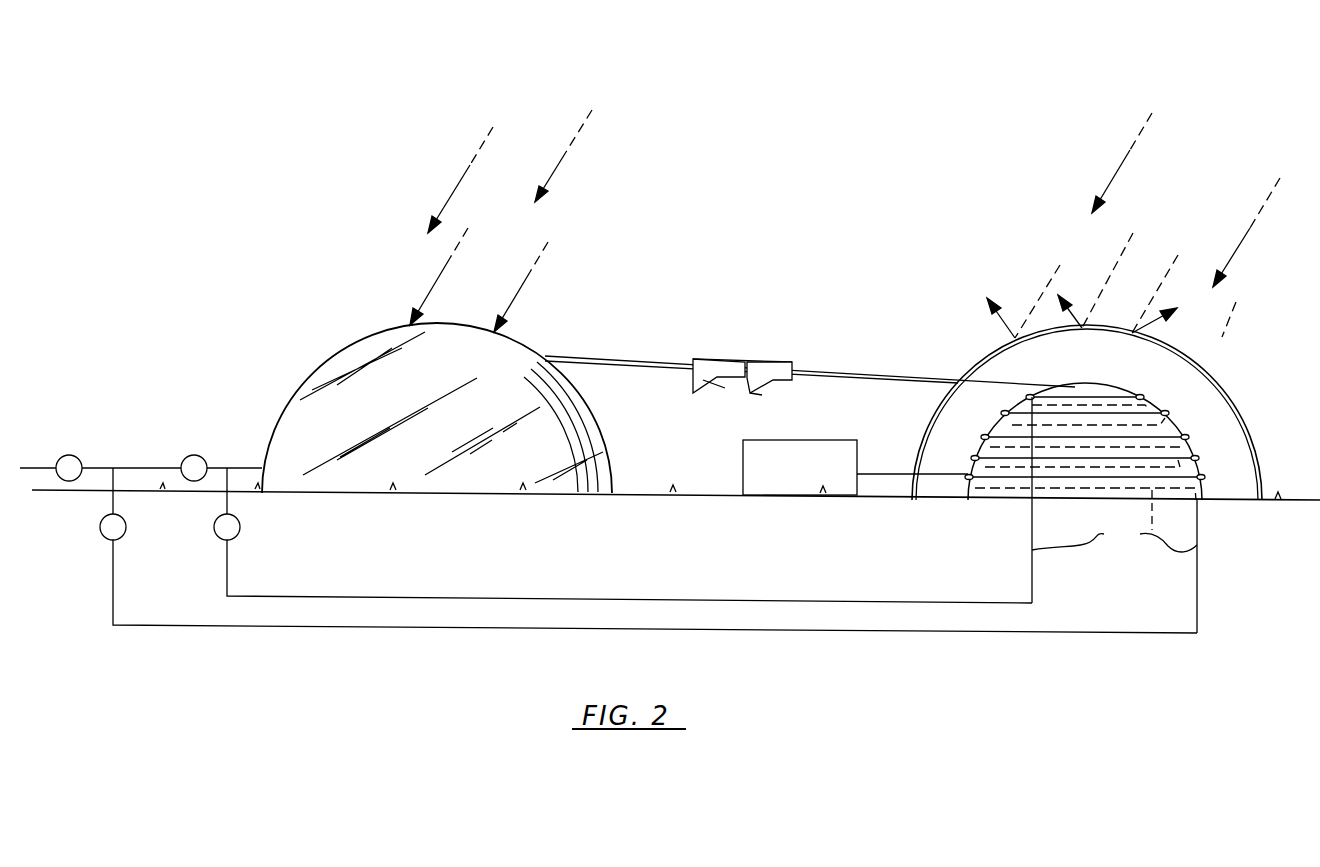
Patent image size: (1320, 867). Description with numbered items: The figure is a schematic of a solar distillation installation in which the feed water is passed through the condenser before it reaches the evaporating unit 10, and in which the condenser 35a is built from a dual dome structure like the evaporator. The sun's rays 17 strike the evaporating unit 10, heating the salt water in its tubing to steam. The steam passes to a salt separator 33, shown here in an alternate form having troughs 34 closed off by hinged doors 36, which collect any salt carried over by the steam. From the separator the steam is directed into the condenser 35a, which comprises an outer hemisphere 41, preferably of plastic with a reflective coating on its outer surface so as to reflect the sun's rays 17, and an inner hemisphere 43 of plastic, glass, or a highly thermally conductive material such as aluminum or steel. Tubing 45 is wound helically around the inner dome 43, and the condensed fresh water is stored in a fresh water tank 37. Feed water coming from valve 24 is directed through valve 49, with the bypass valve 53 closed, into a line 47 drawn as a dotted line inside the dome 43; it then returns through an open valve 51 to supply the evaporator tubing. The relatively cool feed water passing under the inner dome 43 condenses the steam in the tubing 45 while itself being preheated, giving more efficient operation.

The evaporating unit 10 is at (320, 364).
The sun's rays 17 is at (560, 164).
The valve 24 is at (72, 455).
The salt separator 33 is at (712, 358).
The troughs 34 is at (772, 382).
The hinged doors 36 is at (750, 380).
The fresh water tank 37 is at (840, 440).
The outer hemisphere 41 is at (975, 366).
The inner hemisphere 43 is at (1082, 386).
The tubing 45 is at (1163, 413).
The line 47 is at (1152, 530).
The valve 49 is at (126, 530).
The valve 51 is at (240, 530).
The bypass valve 53 is at (204, 455).
The condenser 35a is at (1244, 415).